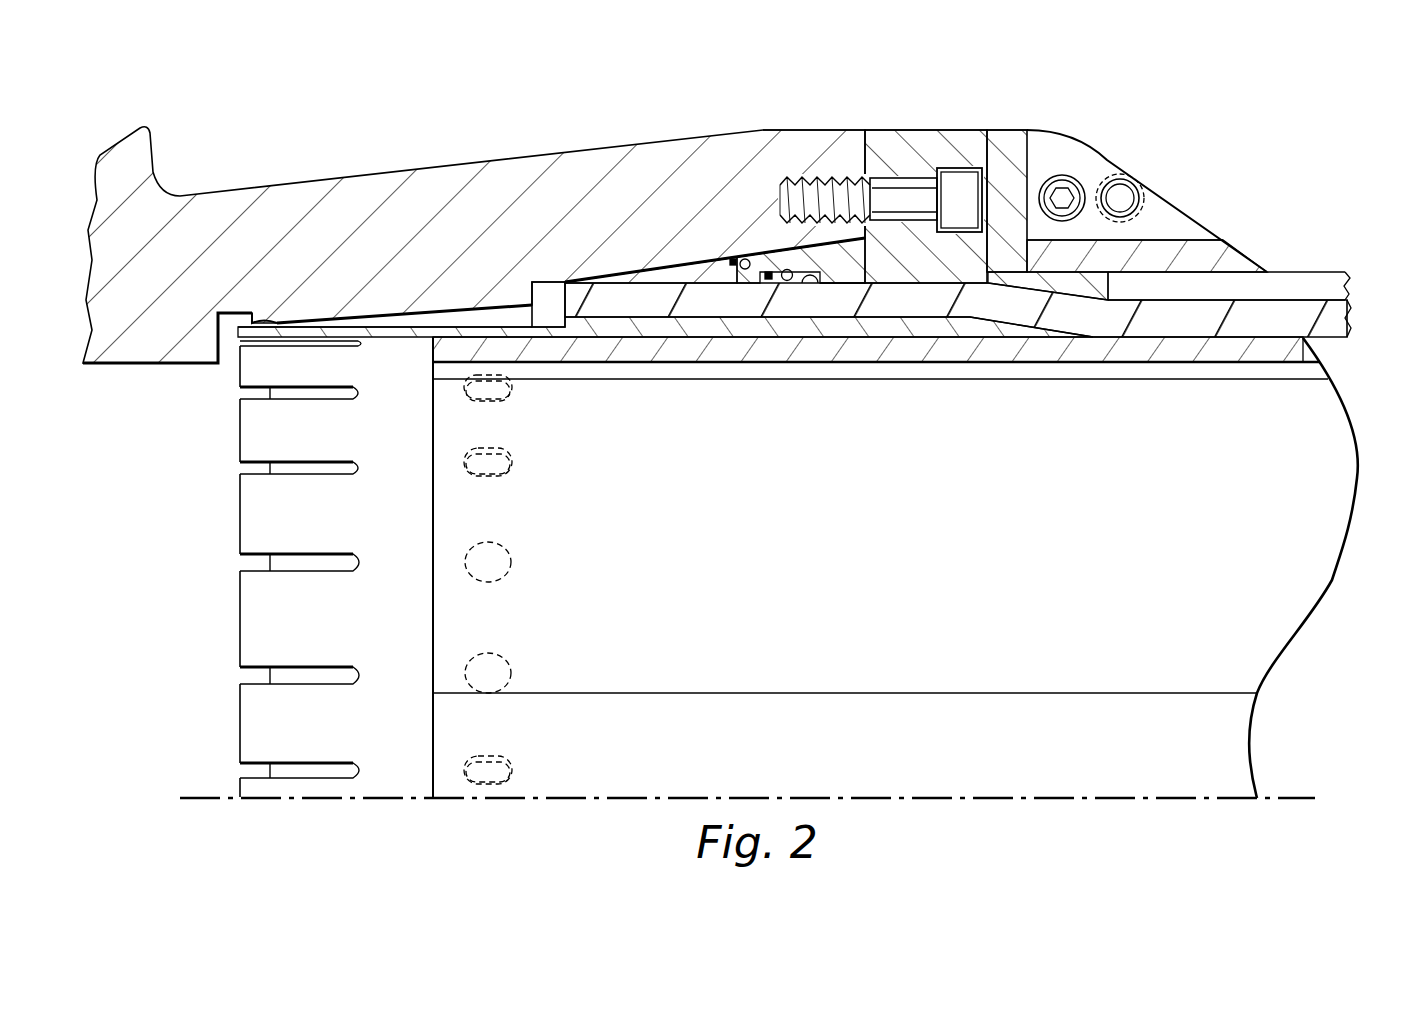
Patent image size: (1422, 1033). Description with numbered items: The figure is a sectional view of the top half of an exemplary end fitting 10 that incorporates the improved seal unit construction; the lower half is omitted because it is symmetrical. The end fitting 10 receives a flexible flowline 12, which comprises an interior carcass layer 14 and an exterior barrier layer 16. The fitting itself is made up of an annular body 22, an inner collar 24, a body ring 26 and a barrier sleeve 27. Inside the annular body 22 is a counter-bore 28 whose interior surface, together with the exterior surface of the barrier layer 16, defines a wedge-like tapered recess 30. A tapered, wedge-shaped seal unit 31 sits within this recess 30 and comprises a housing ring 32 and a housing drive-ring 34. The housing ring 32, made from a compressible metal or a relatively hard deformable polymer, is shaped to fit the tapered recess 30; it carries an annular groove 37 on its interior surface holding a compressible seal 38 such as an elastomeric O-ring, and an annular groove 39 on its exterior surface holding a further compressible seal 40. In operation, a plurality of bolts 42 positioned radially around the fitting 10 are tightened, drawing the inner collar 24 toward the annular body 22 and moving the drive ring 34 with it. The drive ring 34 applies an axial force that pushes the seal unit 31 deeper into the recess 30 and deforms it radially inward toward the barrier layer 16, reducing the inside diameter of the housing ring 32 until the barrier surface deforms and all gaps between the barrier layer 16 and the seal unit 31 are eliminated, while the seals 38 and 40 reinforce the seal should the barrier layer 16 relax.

The end fitting 10 is at (677, 133).
The flexible flowline 12 is at (1284, 237).
The carcass layer 14 is at (1180, 350).
The barrier layer 16 is at (1352, 316).
The annular body 22 is at (418, 175).
The inner collar 24 is at (933, 133).
The body ring 26 is at (472, 308).
The barrier sleeve 27 is at (977, 330).
The counter-bore 28 is at (680, 273).
The tapered recess 30 is at (760, 278).
The seal unit 31 is at (722, 298).
The housing ring 32 is at (809, 284).
The housing drive-ring 34 is at (843, 285).
The annular groove 37 is at (787, 281).
The compressible seal 38 is at (770, 283).
The annular groove 39 is at (736, 262).
The compressible seal 40 is at (740, 262).
The bolts 42 is at (828, 176).